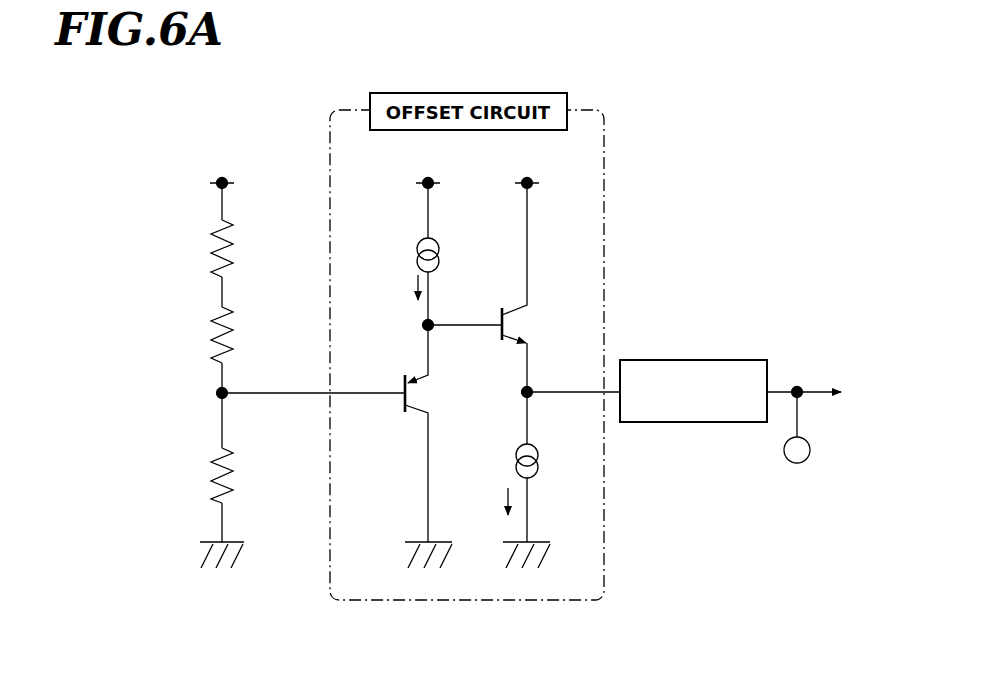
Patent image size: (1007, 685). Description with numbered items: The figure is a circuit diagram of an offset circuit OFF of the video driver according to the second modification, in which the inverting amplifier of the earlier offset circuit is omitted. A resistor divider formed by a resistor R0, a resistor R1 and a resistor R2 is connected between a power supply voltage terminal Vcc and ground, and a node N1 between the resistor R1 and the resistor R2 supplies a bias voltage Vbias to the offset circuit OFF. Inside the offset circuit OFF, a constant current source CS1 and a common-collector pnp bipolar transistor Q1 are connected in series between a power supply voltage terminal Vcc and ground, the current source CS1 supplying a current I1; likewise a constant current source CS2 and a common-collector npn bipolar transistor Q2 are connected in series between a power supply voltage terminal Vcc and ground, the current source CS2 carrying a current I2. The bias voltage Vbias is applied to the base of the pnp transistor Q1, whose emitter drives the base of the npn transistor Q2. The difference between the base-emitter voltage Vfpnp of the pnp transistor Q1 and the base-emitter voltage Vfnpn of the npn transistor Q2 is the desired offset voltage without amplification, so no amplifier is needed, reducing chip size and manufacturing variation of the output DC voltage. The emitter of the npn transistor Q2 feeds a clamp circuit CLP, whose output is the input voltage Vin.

The power supply voltage terminal Vcc is at (374, 172).
The resistor R0 is at (237, 248).
The resistor R1 is at (237, 335).
The resistor R2 is at (237, 475).
The node N1 is at (216, 391).
The bias voltage Vbias is at (313, 380).
The offset circuit OFF is at (604, 207).
The constant current source CS1 is at (450, 255).
The constant current source CS2 is at (549, 461).
The current I1 is at (405, 287).
The current I2 is at (495, 501).
The common-collector pnp bipolar transistor Q1 is at (405, 433).
The common-collector npn bipolar transistor Q2 is at (492, 287).
The base-emitter voltage of the pnp bipolar transistor Vfpnp is at (411, 333).
The base-emitter voltage of the npn bipolar transistor Vfnpn is at (518, 383).
The clamp circuit CLP is at (706, 360).
The input voltage Vin is at (804, 412).